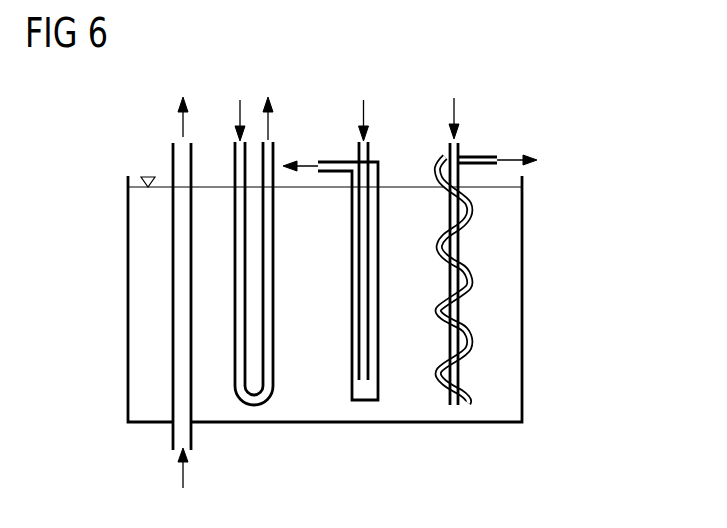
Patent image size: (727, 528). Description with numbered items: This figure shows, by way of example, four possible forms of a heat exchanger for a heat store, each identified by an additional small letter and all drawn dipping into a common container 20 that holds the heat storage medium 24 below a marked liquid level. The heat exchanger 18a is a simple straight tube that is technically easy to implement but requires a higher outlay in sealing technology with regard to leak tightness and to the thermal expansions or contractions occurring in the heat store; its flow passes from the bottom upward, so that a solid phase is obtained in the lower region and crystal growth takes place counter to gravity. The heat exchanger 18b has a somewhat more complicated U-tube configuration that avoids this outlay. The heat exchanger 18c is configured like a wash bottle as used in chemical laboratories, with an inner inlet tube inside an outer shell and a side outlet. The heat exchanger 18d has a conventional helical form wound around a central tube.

The heat exchanger 18a is at (172, 153).
The heat exchanger 18b is at (234, 152).
The heat exchanger 18c is at (330, 160).
The heat exchanger 18d is at (448, 148).
The container 20 is at (325, 338).
The heat transfer medium bath 24 is at (320, 407).